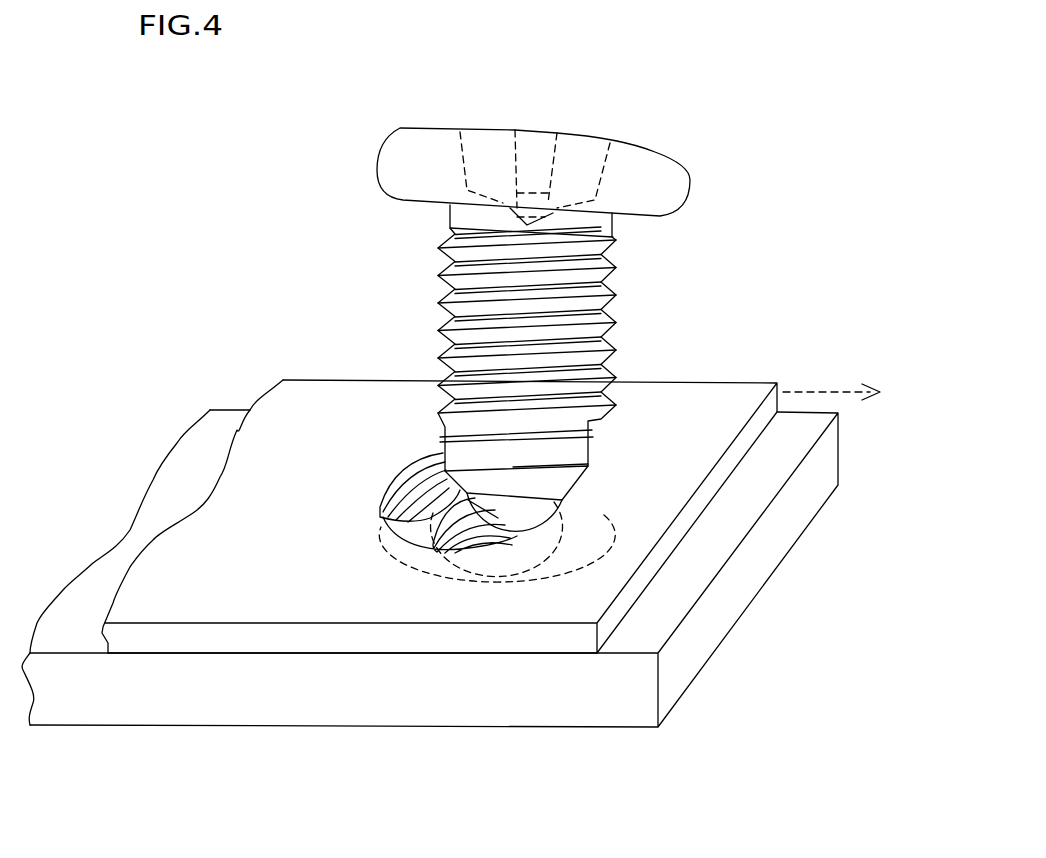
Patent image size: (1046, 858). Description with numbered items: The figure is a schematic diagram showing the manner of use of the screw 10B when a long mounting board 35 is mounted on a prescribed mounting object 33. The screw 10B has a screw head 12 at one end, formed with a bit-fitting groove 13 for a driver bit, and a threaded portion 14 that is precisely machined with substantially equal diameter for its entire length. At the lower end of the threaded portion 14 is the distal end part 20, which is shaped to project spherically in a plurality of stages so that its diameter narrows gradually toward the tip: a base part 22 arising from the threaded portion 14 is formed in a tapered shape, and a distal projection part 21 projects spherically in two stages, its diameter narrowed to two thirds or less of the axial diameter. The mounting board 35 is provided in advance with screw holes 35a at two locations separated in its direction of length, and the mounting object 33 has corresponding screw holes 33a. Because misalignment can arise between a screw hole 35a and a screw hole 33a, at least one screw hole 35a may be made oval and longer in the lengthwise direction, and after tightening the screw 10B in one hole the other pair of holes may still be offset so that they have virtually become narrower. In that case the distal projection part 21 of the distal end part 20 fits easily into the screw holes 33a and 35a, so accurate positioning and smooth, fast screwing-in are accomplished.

The screw 10B is at (547, 273).
The screw head 12 is at (663, 187).
The bit-fitting groove 13 is at (478, 128).
The threaded portion 14 is at (558, 299).
The distal end part 20 is at (478, 472).
The distal projection part 21 is at (463, 517).
The base part 22 is at (552, 489).
The mounting object 33 is at (592, 697).
The screw hole 33a is at (443, 527).
The mounting board 35 is at (670, 397).
The screw hole 35a is at (398, 488).